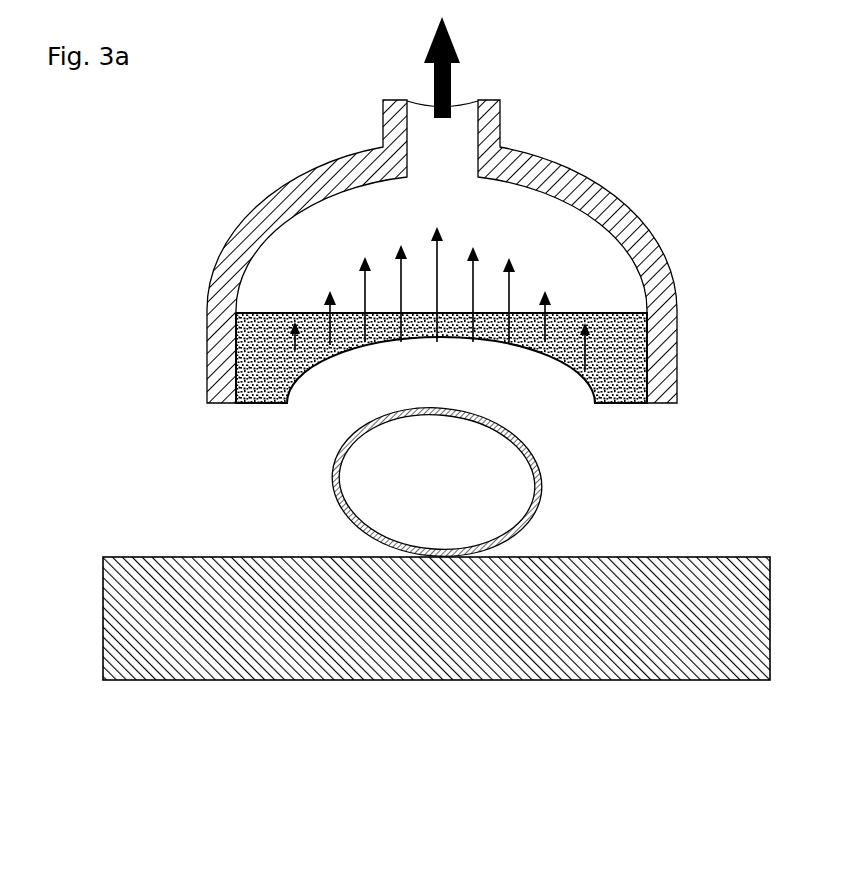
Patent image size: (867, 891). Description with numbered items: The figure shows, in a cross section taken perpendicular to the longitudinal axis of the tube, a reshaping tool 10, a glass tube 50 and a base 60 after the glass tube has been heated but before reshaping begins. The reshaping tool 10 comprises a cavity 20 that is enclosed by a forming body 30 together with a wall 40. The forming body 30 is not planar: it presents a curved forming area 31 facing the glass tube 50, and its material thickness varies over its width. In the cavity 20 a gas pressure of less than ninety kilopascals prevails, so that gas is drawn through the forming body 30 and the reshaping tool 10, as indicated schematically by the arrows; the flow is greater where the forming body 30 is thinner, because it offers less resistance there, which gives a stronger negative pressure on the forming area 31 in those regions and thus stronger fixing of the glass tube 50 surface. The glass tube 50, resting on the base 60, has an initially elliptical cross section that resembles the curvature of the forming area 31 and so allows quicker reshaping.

The reshaping tool 10 is at (606, 71).
The cavity 20 is at (323, 225).
The forming body 30 is at (617, 365).
The forming area 31 is at (290, 382).
The wall 40 is at (610, 212).
The glass tube 50 is at (545, 488).
The base 60 is at (467, 648).